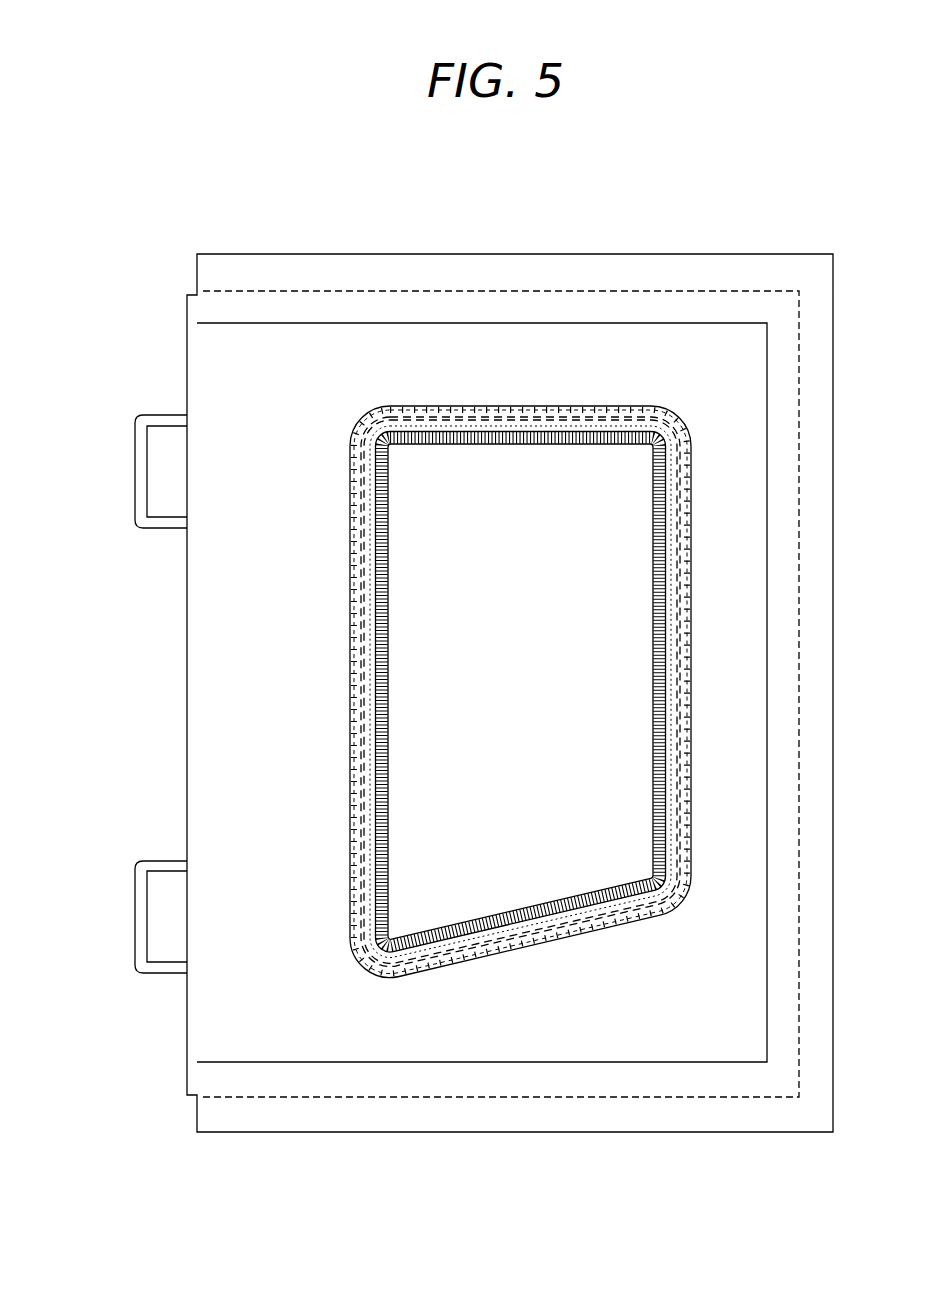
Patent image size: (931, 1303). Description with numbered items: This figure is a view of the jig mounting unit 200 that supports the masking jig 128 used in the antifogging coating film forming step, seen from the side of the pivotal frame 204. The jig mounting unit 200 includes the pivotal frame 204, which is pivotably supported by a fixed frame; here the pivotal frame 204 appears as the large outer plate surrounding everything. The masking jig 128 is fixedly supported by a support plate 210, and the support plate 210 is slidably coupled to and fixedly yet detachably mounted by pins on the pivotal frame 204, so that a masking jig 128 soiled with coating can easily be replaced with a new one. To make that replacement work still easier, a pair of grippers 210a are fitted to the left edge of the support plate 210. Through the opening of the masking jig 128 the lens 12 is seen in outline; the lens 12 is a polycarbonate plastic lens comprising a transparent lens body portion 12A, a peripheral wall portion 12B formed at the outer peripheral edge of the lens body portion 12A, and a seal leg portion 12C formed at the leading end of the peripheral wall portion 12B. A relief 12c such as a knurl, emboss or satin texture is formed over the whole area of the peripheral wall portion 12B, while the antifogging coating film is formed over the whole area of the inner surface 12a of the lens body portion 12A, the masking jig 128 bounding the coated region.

The jig mounting unit 200 is at (310, 216).
The pivotal frame 204 is at (645, 273).
The support plate 210 is at (215, 370).
The grippers 210a is at (168, 522).
The lens 12 is at (461, 663).
The masking jig 128 is at (355, 525).
The seal leg portion 12C is at (350, 628).
The peripheral wall portion 12B is at (464, 692).
The relief 12c is at (387, 655).
The lens body portion 12A is at (448, 733).
The inner surface 12a is at (448, 778).